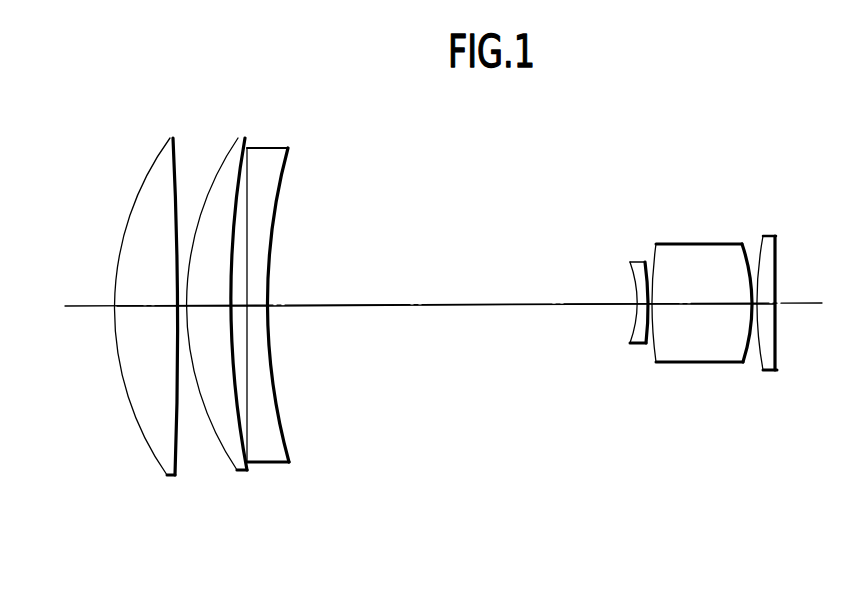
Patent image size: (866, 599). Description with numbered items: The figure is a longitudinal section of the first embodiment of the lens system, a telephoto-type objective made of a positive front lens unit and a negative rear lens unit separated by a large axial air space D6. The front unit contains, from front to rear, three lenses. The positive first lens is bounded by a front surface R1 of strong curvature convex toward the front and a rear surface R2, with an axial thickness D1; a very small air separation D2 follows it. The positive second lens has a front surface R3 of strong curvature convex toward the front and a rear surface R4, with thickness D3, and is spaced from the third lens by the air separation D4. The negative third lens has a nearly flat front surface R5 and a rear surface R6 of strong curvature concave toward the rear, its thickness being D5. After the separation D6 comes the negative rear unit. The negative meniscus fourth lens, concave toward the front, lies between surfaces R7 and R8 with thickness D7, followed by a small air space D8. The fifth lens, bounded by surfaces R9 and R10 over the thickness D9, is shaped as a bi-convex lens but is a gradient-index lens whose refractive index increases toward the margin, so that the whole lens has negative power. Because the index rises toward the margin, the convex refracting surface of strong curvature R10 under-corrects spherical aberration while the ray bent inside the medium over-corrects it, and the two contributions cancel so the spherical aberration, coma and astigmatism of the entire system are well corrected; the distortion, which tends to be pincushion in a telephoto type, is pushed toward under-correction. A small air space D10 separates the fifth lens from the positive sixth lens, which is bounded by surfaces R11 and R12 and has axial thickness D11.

The first lens surface R1 is at (156, 158).
The second lens surface R2 is at (176, 148).
The third lens surface R3 is at (229, 152).
The fourth lens surface R4 is at (246, 146).
The fifth lens surface R5 is at (249, 158).
The sixth lens surface R6 is at (287, 158).
The seventh lens surface R7 is at (629, 264).
The eighth lens surface R8 is at (645, 260).
The ninth lens surface R9 is at (655, 244).
The tenth lens surface R10 is at (743, 244).
The eleventh lens surface R11 is at (764, 235).
The twelfth lens surface R12 is at (776, 237).
The axial thickness of first lens D1 is at (145, 306).
The air separation between first and second lenses D2 is at (188, 306).
The axial thickness of second lens D3 is at (215, 306).
The air separation between second and third lenses D4 is at (238, 306).
The axial thickness of third lens D5 is at (257, 306).
The air separation between front and rear lens units D6 is at (450, 305).
The axial thickness of fourth lens D7 is at (639, 306).
The air separation between fourth and fifth lenses D8 is at (651, 305).
The axial thickness of fifth lens D9 is at (722, 305).
The air separation between fifth and sixth lenses D10 is at (753, 305).
The axial thickness of sixth lens D11 is at (775, 338).